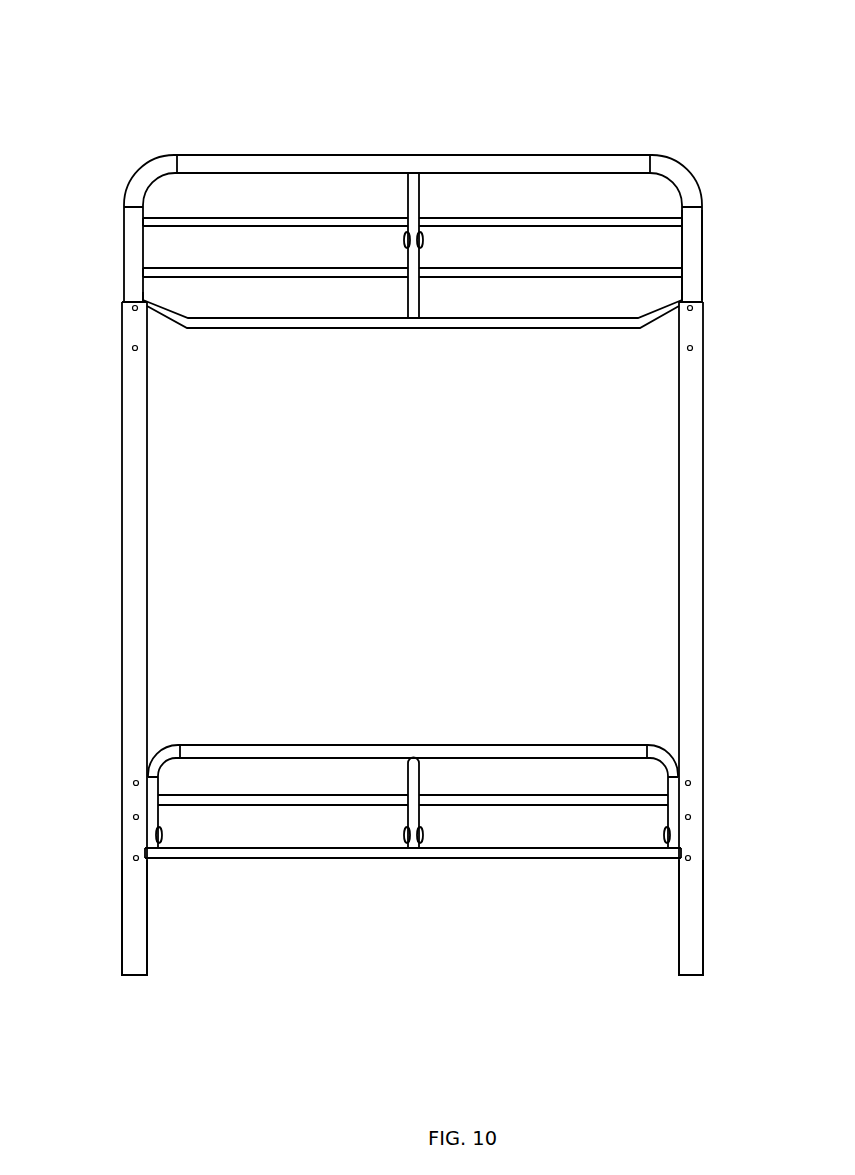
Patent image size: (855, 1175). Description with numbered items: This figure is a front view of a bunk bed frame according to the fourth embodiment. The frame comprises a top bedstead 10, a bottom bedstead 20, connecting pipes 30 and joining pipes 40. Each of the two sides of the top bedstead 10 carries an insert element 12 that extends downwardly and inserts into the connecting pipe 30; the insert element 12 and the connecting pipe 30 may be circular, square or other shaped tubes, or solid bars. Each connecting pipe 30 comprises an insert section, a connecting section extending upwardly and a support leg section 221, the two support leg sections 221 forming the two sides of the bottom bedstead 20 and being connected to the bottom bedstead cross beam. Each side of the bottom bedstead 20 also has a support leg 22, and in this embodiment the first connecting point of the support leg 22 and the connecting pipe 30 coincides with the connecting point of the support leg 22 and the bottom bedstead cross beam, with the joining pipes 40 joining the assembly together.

The top bedstead 10 is at (398, 165).
The insert element 12 is at (695, 247).
The joining pipe 40 is at (703, 297).
The connecting pipe 30 is at (137, 497).
The bottom bedstead 20 is at (412, 860).
The support leg 22 is at (130, 877).
The support leg section 221 is at (693, 880).